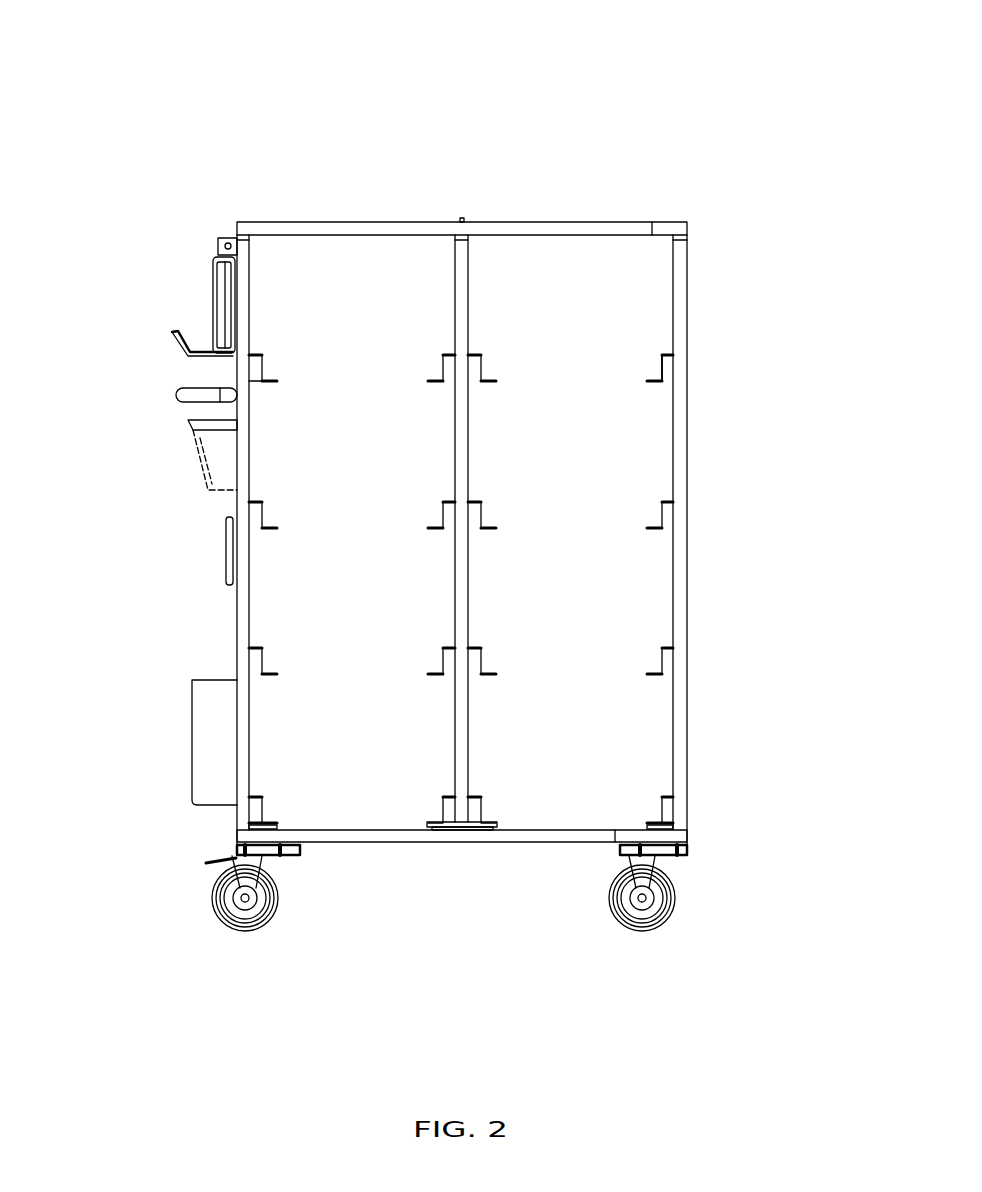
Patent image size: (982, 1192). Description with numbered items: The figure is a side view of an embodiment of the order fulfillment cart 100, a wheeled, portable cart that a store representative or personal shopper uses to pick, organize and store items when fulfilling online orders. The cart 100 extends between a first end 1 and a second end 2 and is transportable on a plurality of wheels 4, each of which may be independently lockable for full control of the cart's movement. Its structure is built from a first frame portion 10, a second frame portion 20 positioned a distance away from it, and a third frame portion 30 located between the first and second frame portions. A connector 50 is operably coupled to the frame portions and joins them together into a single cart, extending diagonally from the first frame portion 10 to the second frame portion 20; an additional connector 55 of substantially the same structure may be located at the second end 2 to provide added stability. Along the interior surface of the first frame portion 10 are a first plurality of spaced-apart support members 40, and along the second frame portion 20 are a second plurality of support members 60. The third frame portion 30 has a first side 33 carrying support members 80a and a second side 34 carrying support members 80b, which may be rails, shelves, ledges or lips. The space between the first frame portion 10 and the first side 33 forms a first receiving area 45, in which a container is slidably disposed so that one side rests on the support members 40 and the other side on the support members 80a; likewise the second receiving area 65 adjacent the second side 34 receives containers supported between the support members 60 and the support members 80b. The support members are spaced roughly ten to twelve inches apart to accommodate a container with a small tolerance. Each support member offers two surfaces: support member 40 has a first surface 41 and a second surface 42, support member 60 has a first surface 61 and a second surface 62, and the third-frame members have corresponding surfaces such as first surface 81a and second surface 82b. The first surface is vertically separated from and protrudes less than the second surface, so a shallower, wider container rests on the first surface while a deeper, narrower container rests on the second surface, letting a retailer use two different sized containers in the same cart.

The order fulfillment cart 100 is at (106, 66).
The first end 1 is at (116, 223).
The second end 2 is at (157, 849).
The wheel 4 is at (216, 909).
The first frame portion 10 is at (239, 604).
The second frame portion 20 is at (683, 394).
The third frame portion 30 is at (461, 281).
The first side 33 is at (450, 766).
The second side 34 is at (470, 781).
The support member 40 is at (255, 367).
The first surface 41 is at (255, 358).
The second surface 42 is at (268, 381).
The first receiving area 45 is at (353, 780).
The connector 50 is at (563, 232).
The additional connector 55 is at (448, 840).
The support member 60 is at (670, 365).
The first surface 61 is at (653, 380).
The second surface 62 is at (664, 353).
The second receiving area 65 is at (558, 770).
The support member 80a is at (445, 648).
The support member 80b is at (480, 505).
The first surface 81a is at (447, 355).
The second surface 82b is at (437, 377).